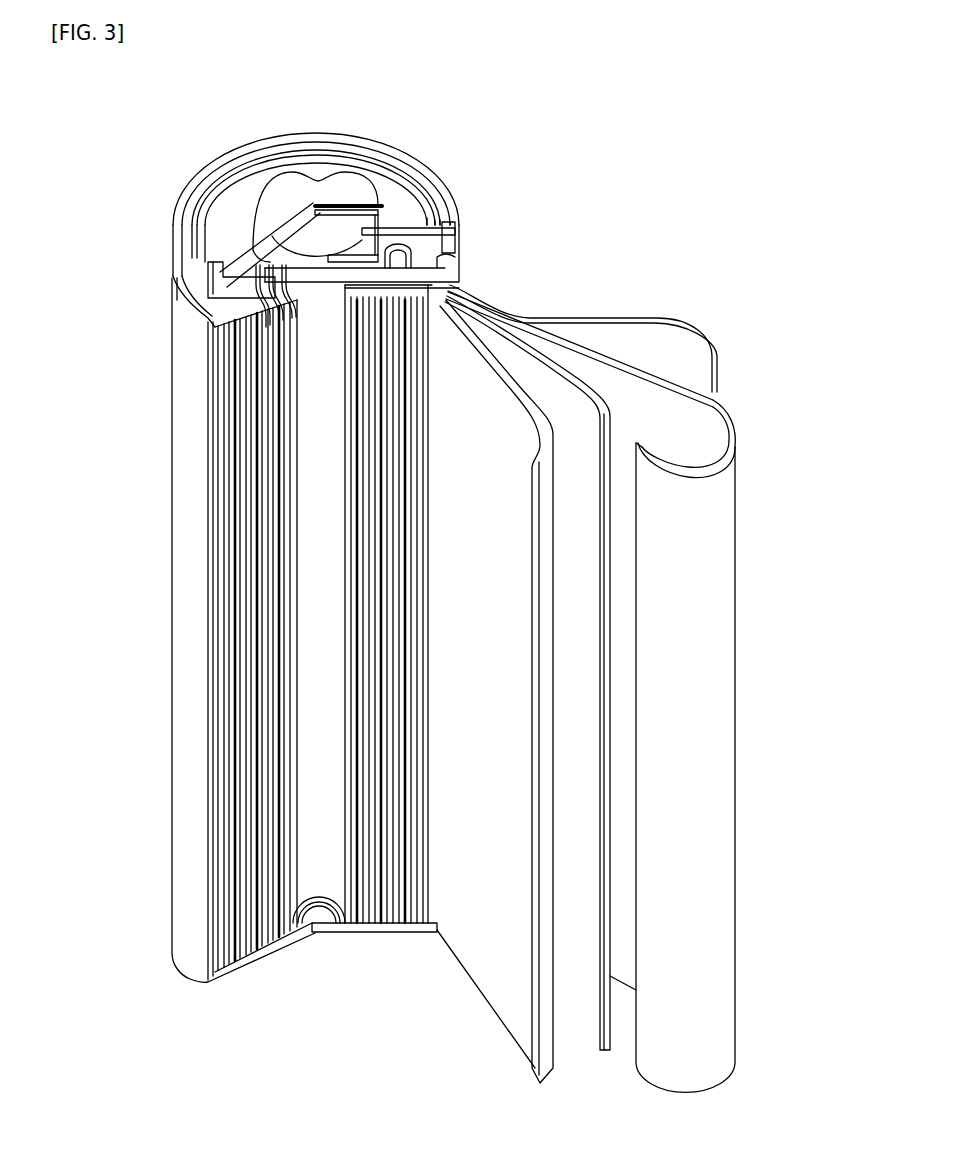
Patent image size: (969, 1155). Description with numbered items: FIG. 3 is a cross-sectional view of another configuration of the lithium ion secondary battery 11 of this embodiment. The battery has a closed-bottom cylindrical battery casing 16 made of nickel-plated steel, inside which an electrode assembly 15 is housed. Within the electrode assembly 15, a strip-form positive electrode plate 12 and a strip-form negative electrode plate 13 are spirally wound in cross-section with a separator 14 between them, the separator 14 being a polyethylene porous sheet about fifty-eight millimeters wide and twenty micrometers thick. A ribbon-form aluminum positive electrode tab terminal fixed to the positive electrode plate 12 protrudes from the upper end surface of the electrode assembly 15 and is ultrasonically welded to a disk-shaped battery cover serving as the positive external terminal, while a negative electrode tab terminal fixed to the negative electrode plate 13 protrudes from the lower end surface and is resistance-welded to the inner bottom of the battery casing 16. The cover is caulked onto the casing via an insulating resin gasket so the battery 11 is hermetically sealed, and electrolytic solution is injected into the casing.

The lithium ion secondary battery 11 is at (466, 134).
The positive electrode plate 12 is at (470, 940).
The negative electrode plate 13 is at (665, 600).
The separator 14 is at (558, 315).
The electrode assembly 15 is at (233, 712).
The battery casing 16 is at (172, 515).